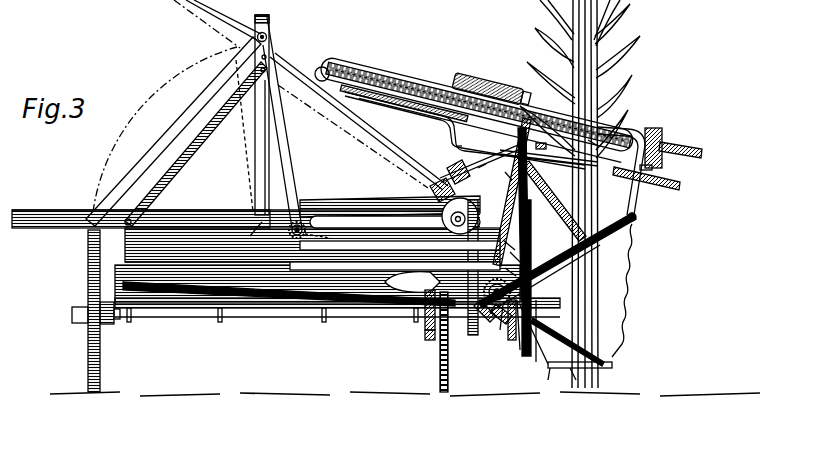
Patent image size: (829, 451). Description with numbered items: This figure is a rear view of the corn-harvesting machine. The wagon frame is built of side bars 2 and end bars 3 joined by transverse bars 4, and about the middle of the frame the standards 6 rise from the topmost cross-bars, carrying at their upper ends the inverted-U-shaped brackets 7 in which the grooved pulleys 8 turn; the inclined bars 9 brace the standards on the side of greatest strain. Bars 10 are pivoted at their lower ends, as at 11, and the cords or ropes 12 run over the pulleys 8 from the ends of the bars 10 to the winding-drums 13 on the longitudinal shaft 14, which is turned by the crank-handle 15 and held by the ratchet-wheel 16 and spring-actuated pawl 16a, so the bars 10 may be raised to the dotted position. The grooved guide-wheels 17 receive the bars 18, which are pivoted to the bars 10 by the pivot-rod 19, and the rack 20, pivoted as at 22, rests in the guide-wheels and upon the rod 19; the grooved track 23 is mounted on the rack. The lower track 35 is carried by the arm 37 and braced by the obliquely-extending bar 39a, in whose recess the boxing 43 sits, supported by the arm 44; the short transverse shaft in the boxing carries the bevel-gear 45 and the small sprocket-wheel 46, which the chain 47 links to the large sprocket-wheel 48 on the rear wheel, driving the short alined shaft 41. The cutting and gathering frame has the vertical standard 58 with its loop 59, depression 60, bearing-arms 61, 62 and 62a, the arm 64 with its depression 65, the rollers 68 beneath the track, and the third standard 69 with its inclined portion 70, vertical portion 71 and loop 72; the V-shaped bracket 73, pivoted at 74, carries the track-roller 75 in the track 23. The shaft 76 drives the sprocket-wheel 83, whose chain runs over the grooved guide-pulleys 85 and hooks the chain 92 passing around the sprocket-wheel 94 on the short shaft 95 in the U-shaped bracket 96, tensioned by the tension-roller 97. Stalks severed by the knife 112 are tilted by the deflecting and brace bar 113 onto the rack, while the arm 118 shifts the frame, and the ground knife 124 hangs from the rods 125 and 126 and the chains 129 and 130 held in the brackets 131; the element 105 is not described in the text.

The side bars 2 is at (312, 245).
The end bars 3 is at (312, 249).
The transverse bars 4 is at (400, 242).
The standards 6 is at (256, 161).
The inverted-U-shaped brackets 7 is at (266, 16).
The grooved pulleys 8 is at (272, 22).
The inclined bars 9 is at (188, 150).
The bars 10 is at (243, 122).
The pivot 11 is at (251, 236).
The cords or ropes 12 is at (176, 130).
The winding-drums 13 is at (290, 235).
The longitudinal shaft 14 is at (306, 233).
The crank-handle 15 is at (391, 258).
The ratchet-wheel 16 is at (312, 242).
The spring-actuated pawl 16a is at (316, 204).
The grooved guide-wheels 17 is at (460, 230).
The bars 18 is at (360, 216).
The pivot-rod 19 is at (90, 232).
The rack 20 is at (246, 210).
The pivot 22 is at (514, 224).
The track 23 is at (432, 190).
The track 35 is at (533, 312).
The arm 37 is at (500, 306).
The obliquely-extending bar 39a is at (356, 300).
The short alined shaft 41 is at (516, 268).
The boxing 43 is at (426, 320).
The arm 44 is at (496, 326).
The bevel-gear 45 is at (482, 314).
The small sprocket-wheel 46 is at (317, 284).
The chain 47 is at (426, 336).
The large sprocket-wheel 48 is at (440, 350).
The vertical standard 58 is at (510, 176).
The loop 59 is at (324, 64).
The depression 60 is at (448, 124).
The bearing-arm 61 is at (542, 148).
The second bearing-arm 62 is at (505, 92).
The bearing-arm 62a is at (518, 252).
The arm 64 is at (392, 106).
The depression 65 is at (448, 172).
The wheels or rollers 68 is at (512, 342).
The third standard 69 is at (637, 200).
The inclined portion 70 is at (540, 324).
The vertical portion 71 is at (528, 352).
The loop 72 is at (398, 81).
The V-shaped bracket 73 is at (493, 170).
The pivot 74 is at (466, 137).
The track-roller 75 is at (445, 179).
The shaft 76 is at (528, 185).
The sprocket-wheel 83 is at (420, 108).
The grooved guide-pulleys 85 is at (345, 70).
The chain 92 is at (430, 90).
The sprocket-wheel 94 is at (703, 153).
The short shaft 95 is at (653, 169).
The U-shaped bracket 96 is at (646, 133).
The tension-roller 97 is at (594, 146).
The lower cutter bar 105 is at (681, 187).
The knife 112 is at (560, 262).
The deflecting and brace bar 113 is at (566, 216).
The arm 118 is at (500, 330).
The knife 124 is at (613, 366).
The rod 125 is at (597, 354).
The rod 126 is at (574, 370).
The chain 129 is at (619, 292).
The chain 130 is at (550, 370).
The brackets 131 is at (634, 220).